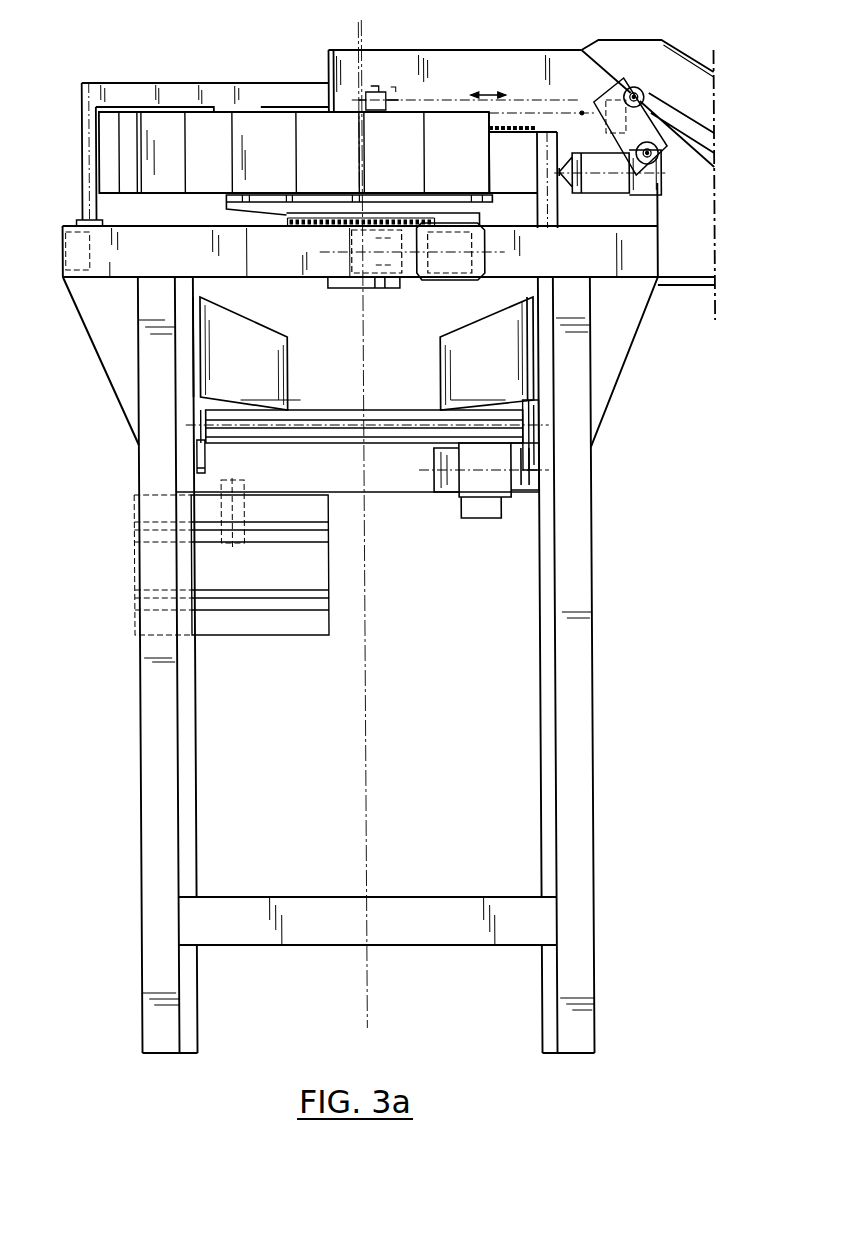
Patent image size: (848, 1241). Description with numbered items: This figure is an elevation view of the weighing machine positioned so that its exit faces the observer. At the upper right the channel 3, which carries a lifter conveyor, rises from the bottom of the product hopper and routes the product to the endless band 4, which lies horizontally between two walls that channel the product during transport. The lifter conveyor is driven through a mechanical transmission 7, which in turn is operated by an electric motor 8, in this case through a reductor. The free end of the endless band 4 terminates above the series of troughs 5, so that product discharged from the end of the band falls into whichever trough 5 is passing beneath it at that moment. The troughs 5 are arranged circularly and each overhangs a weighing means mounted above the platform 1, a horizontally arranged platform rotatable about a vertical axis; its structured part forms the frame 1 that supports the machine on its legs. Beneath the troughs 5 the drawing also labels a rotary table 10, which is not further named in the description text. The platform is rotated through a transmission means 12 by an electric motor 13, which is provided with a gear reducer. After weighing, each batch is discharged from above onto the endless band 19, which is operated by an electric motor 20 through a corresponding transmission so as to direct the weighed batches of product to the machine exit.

The platform 1 is at (122, 95).
The channel 3 is at (702, 98).
The endless band 4 is at (447, 100).
The trough 5 is at (312, 123).
The mechanical transmission 7 is at (635, 88).
The electric motor 8 is at (605, 190).
The rotary table 10 is at (227, 202).
The transmission means 12 is at (273, 345).
The electric motor 13 is at (447, 280).
The endless band 19 is at (377, 413).
The electric motor 20 is at (497, 483).